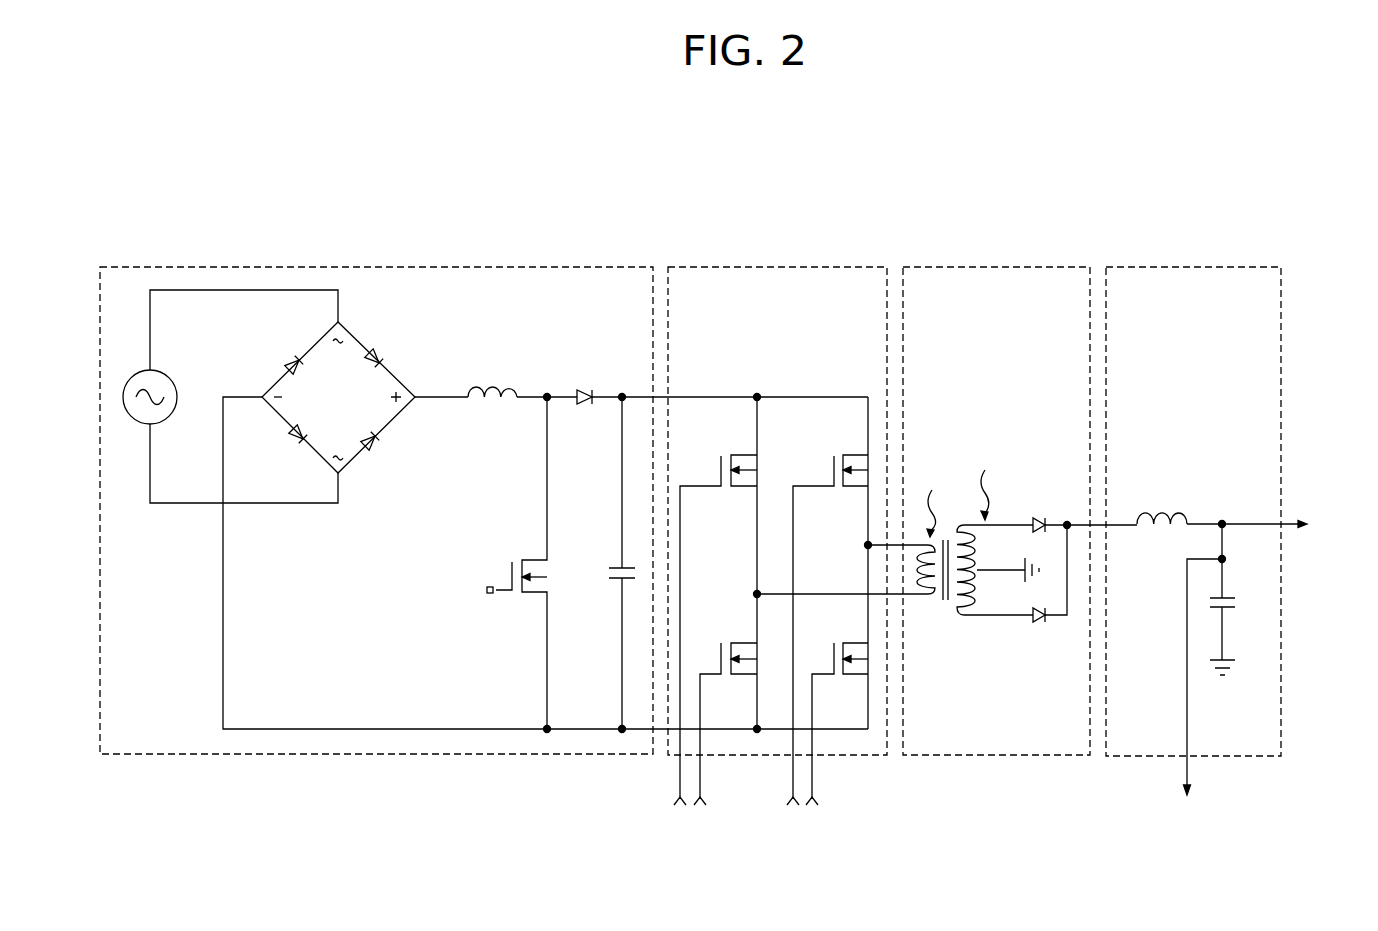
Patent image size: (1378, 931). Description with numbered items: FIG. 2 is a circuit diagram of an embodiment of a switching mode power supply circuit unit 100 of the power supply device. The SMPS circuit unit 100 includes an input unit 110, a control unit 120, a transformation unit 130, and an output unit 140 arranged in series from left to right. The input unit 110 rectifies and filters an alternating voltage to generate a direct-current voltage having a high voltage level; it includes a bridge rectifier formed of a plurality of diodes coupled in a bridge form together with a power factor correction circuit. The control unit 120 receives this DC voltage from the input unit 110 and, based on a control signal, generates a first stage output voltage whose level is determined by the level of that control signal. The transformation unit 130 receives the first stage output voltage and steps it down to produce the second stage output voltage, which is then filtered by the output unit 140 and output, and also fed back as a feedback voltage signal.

The SMPS circuit unit 100 is at (737, 189).
The input unit 110 is at (395, 266).
The control unit 120 is at (772, 266).
The transformation unit 130 is at (999, 266).
The output unit 140 is at (1194, 266).